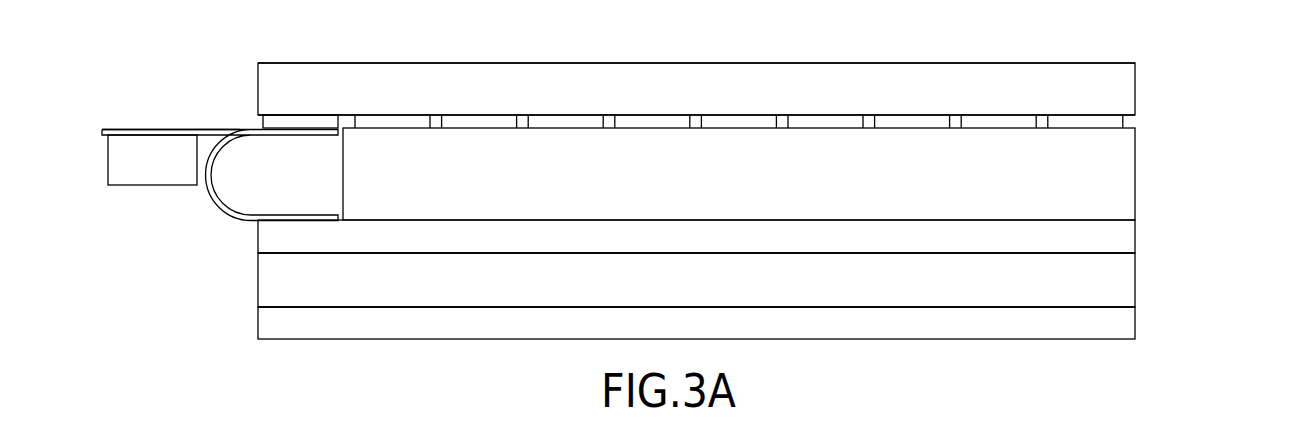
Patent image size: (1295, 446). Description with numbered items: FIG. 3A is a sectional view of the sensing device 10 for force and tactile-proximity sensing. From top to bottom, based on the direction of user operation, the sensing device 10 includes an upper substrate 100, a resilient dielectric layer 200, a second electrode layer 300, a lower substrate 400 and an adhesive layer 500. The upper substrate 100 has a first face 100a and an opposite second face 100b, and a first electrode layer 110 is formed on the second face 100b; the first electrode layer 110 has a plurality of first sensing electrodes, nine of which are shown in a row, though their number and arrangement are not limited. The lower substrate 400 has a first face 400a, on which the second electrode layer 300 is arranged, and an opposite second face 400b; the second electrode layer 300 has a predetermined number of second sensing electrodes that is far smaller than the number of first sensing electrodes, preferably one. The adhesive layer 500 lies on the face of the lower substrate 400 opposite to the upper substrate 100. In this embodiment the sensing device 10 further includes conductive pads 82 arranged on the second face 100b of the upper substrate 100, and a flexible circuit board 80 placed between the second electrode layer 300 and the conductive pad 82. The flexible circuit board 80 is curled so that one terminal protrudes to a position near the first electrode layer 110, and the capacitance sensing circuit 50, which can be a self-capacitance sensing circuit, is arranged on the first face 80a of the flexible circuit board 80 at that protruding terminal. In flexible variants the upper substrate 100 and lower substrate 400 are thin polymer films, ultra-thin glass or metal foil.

The sensing device 10 is at (632, 40).
The upper substrate 100 is at (739, 73).
The first face 100a is at (975, 63).
The second face 100b is at (1047, 130).
The first electrode layer 110 is at (1123, 118).
The conductive pad 82 is at (278, 122).
The resilient dielectric layer 200 is at (1127, 173).
The second electrode layer 300 is at (1127, 237).
The lower substrate 400 is at (1127, 278).
The first face 400a is at (1112, 254).
The second face 400b is at (1110, 308).
The adhesive layer 500 is at (1127, 323).
The flexible circuit board 80 is at (205, 196).
The first face 80a is at (168, 128).
The capacitance sensing circuit 50 is at (152, 185).